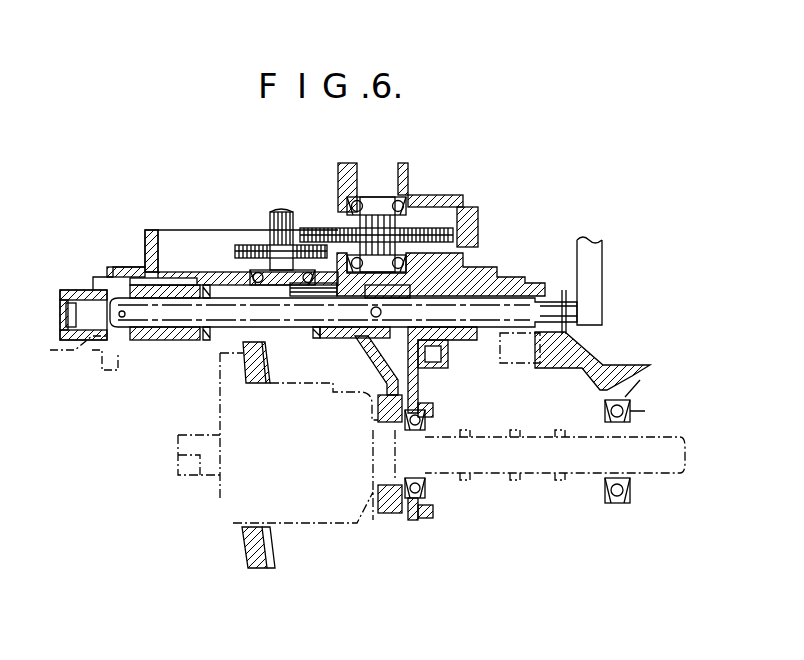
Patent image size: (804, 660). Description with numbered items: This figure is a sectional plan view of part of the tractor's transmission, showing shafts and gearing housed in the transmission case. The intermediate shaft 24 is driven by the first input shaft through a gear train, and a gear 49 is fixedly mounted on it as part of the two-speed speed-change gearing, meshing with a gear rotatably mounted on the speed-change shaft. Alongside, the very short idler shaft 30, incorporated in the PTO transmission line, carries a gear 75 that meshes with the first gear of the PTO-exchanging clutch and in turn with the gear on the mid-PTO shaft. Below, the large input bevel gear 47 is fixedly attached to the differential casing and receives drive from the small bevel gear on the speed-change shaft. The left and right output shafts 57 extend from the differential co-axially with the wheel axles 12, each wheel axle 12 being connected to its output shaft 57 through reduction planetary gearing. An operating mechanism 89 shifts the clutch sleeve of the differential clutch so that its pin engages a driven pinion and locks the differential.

The wheel axle 12 is at (655, 400).
The intermediate shaft 24 is at (279, 212).
The idler shaft 30 is at (370, 222).
The input bevel gear 47 is at (272, 553).
The gear 49 is at (243, 245).
The output shaft 57 is at (195, 457).
The gear 75 is at (437, 228).
The operating mechanism 89 is at (354, 350).